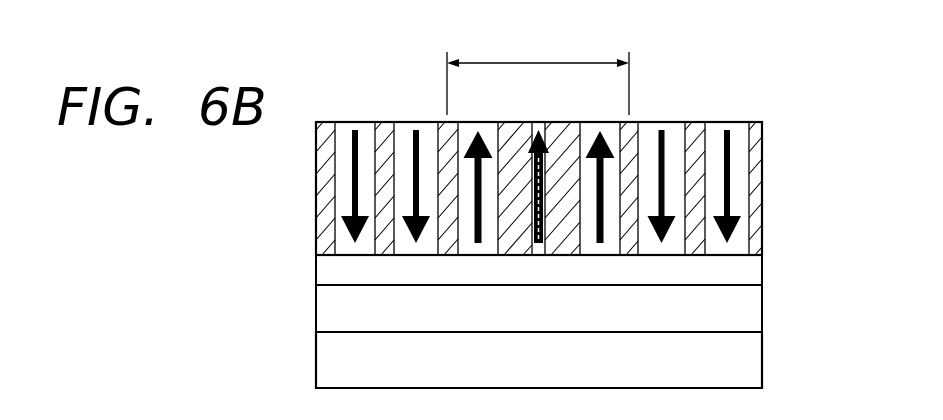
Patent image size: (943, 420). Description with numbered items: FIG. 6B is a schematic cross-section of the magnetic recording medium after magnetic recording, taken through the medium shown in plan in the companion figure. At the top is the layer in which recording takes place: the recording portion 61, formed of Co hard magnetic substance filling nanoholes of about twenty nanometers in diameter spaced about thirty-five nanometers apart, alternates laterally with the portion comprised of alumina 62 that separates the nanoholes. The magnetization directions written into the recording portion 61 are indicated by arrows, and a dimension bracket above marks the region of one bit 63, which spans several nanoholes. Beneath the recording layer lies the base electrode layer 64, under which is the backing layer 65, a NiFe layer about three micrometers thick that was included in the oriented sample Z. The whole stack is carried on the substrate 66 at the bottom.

The recording portion 61 is at (762, 132).
The portion comprised of alumina 62 is at (762, 178).
The region of one bit 63 is at (534, 63).
The base electrode layer 64 is at (753, 273).
The backing layer 65 is at (753, 311).
The substrate 66 is at (753, 349).